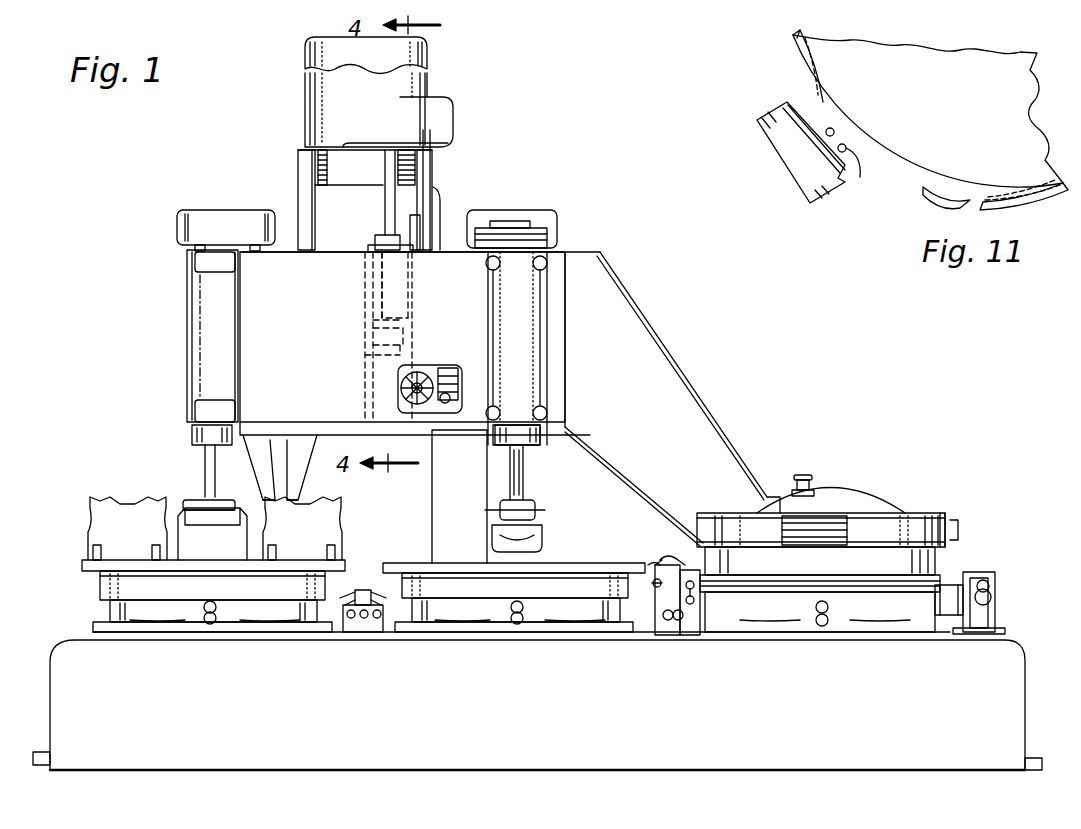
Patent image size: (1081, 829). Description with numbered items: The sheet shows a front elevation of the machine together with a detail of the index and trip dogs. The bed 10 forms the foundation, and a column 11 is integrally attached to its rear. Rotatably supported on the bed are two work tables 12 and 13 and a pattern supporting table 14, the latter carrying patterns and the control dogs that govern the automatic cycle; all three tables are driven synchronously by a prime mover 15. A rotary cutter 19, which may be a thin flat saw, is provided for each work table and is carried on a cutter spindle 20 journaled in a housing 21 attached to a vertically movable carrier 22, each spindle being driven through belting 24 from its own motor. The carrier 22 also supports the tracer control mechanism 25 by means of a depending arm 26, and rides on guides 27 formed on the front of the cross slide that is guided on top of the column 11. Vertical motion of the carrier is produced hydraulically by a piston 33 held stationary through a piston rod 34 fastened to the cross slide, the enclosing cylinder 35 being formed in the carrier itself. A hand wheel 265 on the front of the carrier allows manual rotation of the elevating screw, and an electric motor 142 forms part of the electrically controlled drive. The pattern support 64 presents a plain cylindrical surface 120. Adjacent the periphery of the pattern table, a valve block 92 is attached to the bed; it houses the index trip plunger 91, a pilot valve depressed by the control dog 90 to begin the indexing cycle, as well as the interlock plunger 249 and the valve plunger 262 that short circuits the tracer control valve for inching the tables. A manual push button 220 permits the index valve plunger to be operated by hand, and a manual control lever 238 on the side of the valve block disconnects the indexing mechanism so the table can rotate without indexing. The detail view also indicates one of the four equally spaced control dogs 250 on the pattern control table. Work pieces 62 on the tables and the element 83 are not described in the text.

In FIG. 1, the bed 10 is at (1018, 672).
In FIG. 1, the column 11 is at (296, 175).
In FIG. 1, the work table 12 is at (82, 562).
In FIG. 1, the work table 13 is at (398, 562).
In FIG. 1, the pattern supporting table 14 is at (935, 560).
In FIG. 11, the pattern supporting table 14 is at (1025, 63).
In FIG. 1, the prime mover 15 is at (998, 582).
In FIG. 1, the rotary cutter 19 is at (540, 515).
In FIG. 1, the cutter spindle 20 is at (208, 463).
In FIG. 1, the housing 21 is at (520, 333).
In FIG. 1, the carrier 22 is at (452, 255).
In FIG. 1, the belting 24 is at (560, 232).
In FIG. 1, the tracer control mechanism 25 is at (780, 498).
In FIG. 1, the depending arm 26 is at (675, 382).
In FIG. 1, the guides 27 is at (207, 347).
In FIG. 1, the piston 33 is at (378, 318).
In FIG. 1, the piston rod 34 is at (383, 208).
In FIG. 1, the cylinder 35 is at (368, 333).
In FIG. 1, the workpiece 62 is at (97, 498).
In FIG. 1, the pattern support 64 is at (920, 520).
In FIG. 1, the rod 83 is at (435, 163).
In FIG. 11, the control dog 90 is at (950, 198).
In FIG. 11, the index trip plunger 91 is at (835, 130).
In FIG. 11, the valve block 92 is at (770, 118).
In FIG. 1, the plain cylindrical surface 120 is at (893, 528).
In FIG. 1, the electric motor 142 is at (437, 372).
In FIG. 1, the manual push button 220 is at (657, 590).
In FIG. 1, the manual control lever 238 is at (695, 605).
In FIG. 11, the interlock plunger 249 is at (860, 177).
In FIG. 11, the control dog 250 is at (1020, 200).
In FIG. 1, the valve 262 is at (643, 562).
In FIG. 1, the hand wheel 265 is at (418, 380).